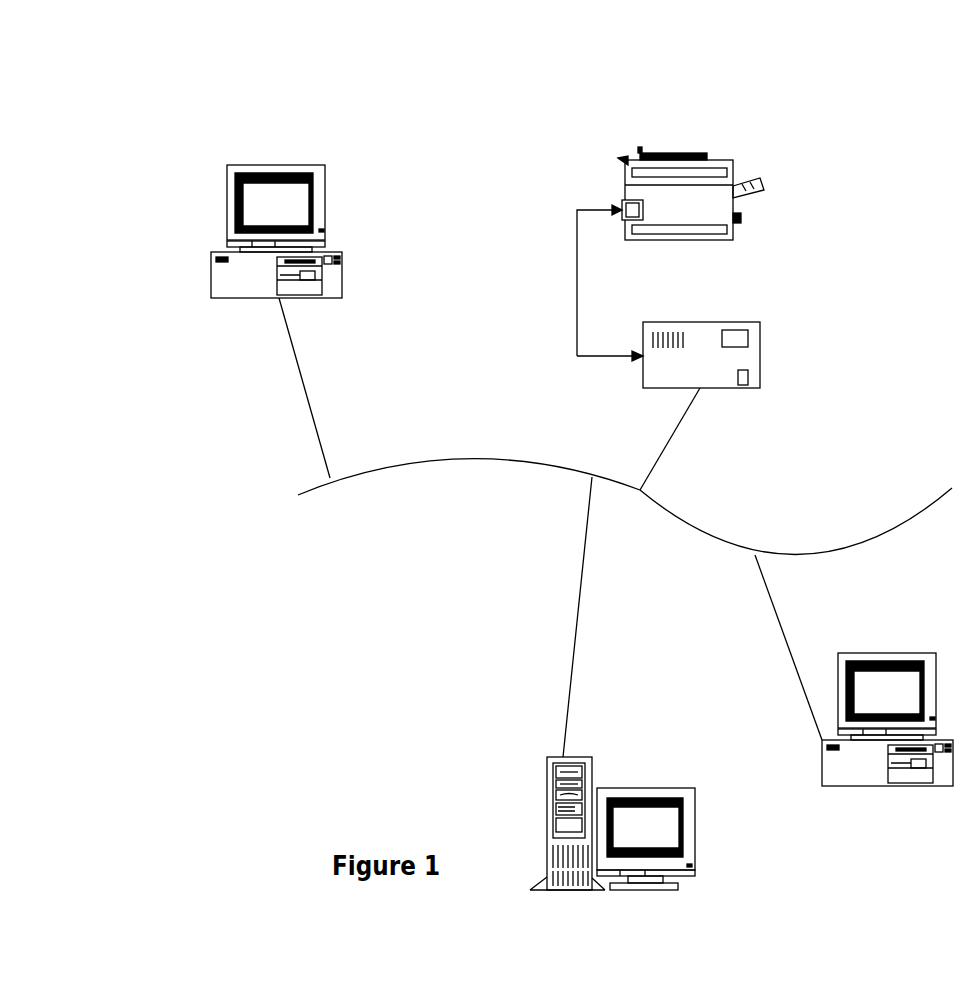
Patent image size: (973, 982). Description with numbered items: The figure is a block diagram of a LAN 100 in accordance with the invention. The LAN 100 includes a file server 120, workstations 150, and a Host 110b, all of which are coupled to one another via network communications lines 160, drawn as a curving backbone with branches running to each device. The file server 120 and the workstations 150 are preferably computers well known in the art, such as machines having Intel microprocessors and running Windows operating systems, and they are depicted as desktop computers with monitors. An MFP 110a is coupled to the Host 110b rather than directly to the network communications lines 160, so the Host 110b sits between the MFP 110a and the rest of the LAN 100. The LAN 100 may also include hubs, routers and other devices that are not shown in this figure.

The LAN 100 is at (142, 416).
The MFP 110a is at (689, 147).
The Host 110b is at (699, 322).
The file server 120 is at (646, 788).
The workstations 150 is at (274, 165).
The network communications lines 160 is at (380, 473).